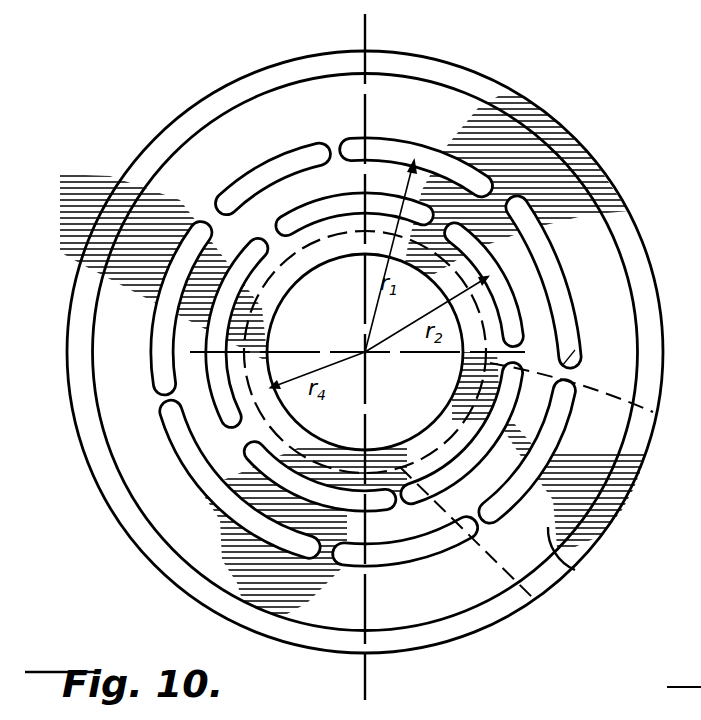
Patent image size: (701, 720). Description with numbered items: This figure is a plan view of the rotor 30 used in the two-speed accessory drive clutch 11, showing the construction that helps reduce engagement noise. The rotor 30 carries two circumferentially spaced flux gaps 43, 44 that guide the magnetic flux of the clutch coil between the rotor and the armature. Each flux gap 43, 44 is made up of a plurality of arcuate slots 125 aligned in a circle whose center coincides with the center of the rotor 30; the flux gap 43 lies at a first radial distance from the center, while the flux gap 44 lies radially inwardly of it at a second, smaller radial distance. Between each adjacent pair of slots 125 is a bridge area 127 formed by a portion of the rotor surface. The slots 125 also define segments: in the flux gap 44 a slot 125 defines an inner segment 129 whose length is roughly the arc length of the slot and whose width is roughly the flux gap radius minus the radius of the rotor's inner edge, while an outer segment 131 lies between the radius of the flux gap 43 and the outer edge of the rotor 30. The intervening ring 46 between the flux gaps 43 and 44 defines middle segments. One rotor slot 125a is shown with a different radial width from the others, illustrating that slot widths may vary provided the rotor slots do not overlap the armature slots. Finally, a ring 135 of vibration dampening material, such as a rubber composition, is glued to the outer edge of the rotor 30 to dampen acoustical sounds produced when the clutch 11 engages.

The rotor 30 is at (552, 106).
The ring 135 is at (217, 90).
The arcuate slots 125 is at (273, 167).
The rotor slot 125a is at (578, 262).
The flux gap 43 is at (381, 140).
The flux gap 44 is at (476, 254).
The intervening ring 46 is at (284, 214).
The bridge area 127 is at (577, 360).
The inner segment 129 is at (444, 428).
The outer segment 131 is at (578, 570).
The clutch 11 is at (335, 22).